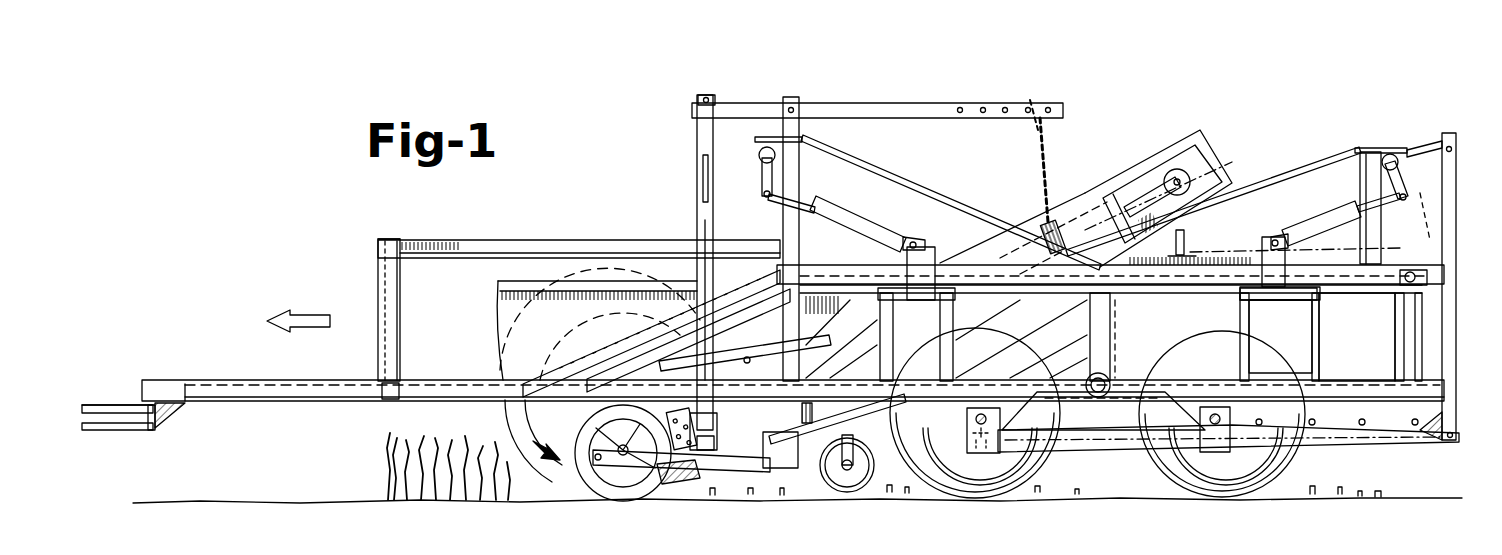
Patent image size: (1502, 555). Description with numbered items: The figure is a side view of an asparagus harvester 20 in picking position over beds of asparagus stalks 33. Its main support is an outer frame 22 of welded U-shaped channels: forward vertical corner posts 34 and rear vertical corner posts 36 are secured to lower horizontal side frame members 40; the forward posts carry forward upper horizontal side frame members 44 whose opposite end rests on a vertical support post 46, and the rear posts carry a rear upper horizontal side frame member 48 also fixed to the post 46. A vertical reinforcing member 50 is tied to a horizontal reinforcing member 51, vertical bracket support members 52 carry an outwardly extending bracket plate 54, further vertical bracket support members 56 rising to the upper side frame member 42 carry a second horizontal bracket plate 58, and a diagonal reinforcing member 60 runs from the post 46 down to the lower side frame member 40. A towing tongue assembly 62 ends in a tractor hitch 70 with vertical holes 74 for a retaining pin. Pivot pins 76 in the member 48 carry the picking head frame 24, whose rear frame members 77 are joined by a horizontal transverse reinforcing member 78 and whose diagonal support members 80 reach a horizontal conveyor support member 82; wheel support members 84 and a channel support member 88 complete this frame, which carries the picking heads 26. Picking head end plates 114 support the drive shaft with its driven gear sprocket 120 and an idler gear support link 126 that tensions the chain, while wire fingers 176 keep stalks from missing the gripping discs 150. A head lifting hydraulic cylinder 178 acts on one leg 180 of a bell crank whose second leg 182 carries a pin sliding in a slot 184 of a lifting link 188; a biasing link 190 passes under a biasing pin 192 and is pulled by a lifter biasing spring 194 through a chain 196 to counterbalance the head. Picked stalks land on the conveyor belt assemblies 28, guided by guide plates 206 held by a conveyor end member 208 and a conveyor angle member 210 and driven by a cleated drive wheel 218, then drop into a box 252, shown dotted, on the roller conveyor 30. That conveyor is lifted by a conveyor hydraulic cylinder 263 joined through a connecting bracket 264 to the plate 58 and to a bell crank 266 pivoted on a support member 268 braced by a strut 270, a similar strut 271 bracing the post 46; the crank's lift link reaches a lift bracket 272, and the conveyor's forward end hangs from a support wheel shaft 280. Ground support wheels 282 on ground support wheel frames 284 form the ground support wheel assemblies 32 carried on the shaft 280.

The harvester 20 is at (262, 200).
The outer frame 22 is at (1330, 80).
The picking head frame 24 is at (633, 213).
The picking heads 26 is at (490, 366).
The conveyor belt assemblies 28 is at (1026, 193).
The roller conveyor assembly 30 is at (1460, 336).
The ground support wheel assemblies 32 is at (1130, 456).
The asparagus stalks 33 is at (374, 455).
The forward vertical corner posts 34 is at (388, 287).
The rear vertical corner posts 36 is at (1405, 322).
The lower horizontal side frame members 40 is at (1376, 380).
The upper horizontal side frame member 42 is at (395, 240).
The forward upper horizontal side frame members 44 is at (527, 242).
The vertical support post 46 is at (800, 248).
The rear upper horizontal side frame member 48 is at (1398, 262).
The vertical reinforcing member 50 is at (1140, 305).
The horizontal reinforcing member 51 is at (1116, 336).
The vertical bracket support members 52 is at (878, 325).
The bracket plate 54 is at (880, 310).
The vertical bracket support members 56 is at (1258, 333).
The second horizontal bracket plate 58 is at (1279, 337).
The diagonal reinforcing member 60 is at (598, 356).
The towing tongue assembly 62 is at (222, 358).
The tractor hitch 70 is at (130, 438).
The vertical holes 74 is at (102, 404).
The picking head pivot pins 76 is at (1420, 265).
The rear picking head frame members 77 is at (1237, 253).
The horizontal transverse reinforcing member 78 is at (1203, 240).
The diagonal picking head support members 80 is at (1040, 322).
The horizontal conveyor support member 82 is at (790, 497).
The wheel support members 84 is at (745, 498).
The channel support member 88 is at (656, 453).
The picking head end plates 114 is at (512, 335).
The driven gear sprocket 120 is at (625, 344).
The idler gear support link 126 is at (735, 356).
The gripping discs 150 is at (468, 553).
The wire fingers 176 is at (505, 442).
The head lifting hydraulic cylinder 178 is at (855, 226).
The bell crank leg 180 is at (760, 180).
The second bell crank leg 182 is at (736, 150).
The slot 184 is at (703, 184).
The lifting link 188 is at (700, 220).
The biasing link 190 is at (858, 107).
The biasing pin 192 is at (708, 95).
The lifter biasing spring 194 is at (1062, 205).
The chain 196 is at (1046, 154).
The guide plates 206 is at (1137, 157).
The conveyor end member 208 is at (1226, 166).
The conveyor angle member 210 is at (1212, 190).
The cleated drive wheel 218 is at (856, 498).
The box 252 is at (1412, 197).
The conveyor hydraulic cylinder 263 is at (1337, 208).
The connecting bracket 264 is at (1273, 258).
The bell crank 266 is at (1420, 150).
The support member 268 is at (1365, 151).
The strut 270 is at (1322, 158).
The strut 271 is at (905, 186).
The lift bracket 272 is at (162, 427).
The support wheel shaft 280 is at (1110, 353).
The ground support wheels 282 is at (1050, 465).
The ground support wheel frames 284 is at (1113, 429).